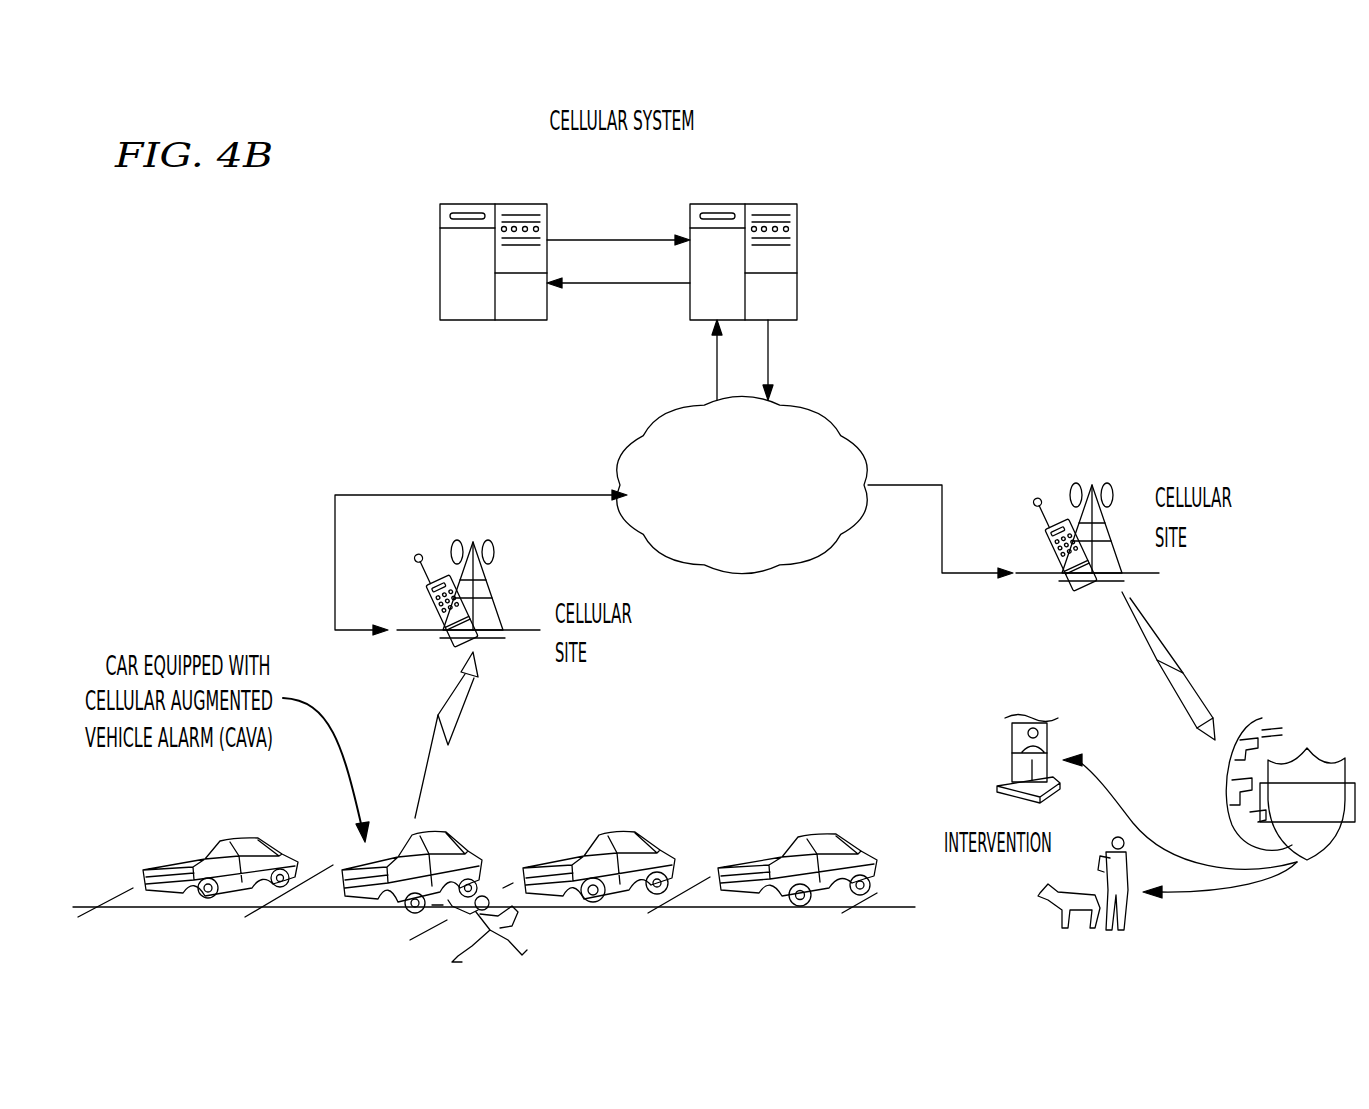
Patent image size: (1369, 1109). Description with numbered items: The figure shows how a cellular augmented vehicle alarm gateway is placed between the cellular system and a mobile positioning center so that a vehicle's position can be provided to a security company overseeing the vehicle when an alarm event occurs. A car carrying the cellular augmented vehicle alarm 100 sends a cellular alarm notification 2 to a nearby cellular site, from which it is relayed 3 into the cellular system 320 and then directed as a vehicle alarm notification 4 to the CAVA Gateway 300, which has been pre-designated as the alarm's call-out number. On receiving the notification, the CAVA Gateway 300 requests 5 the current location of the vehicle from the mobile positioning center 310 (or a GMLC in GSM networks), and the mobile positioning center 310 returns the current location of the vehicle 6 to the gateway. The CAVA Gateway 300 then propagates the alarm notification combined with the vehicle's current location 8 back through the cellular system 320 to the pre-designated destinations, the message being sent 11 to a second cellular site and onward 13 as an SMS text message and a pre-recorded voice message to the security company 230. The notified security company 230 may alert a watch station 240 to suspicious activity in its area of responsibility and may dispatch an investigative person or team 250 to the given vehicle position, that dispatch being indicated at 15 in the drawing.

The cellular alarm notification 2 is at (446, 735).
The relayed alarm notification 3 is at (481, 562).
The vehicle alarm notification 4 is at (705, 360).
The location request 5 is at (618, 300).
The current location of the vehicle 6 is at (618, 226).
The vehicle alarm notification combined with current location 8 is at (778, 360).
The notification message transmission 11 is at (940, 531).
The notification message transmission 13 is at (1168, 666).
The dispatch to intervention personnel 15 is at (1220, 894).
The cellular augmented vehicle alarm 100 is at (463, 838).
The security company 230 is at (1287, 725).
The watch station 240 is at (1008, 757).
The investigative person or team 250 is at (1052, 913).
The CAVA Gateway 300 is at (797, 291).
The mobile positioning center 310 is at (440, 291).
The cellular system 320 is at (841, 444).